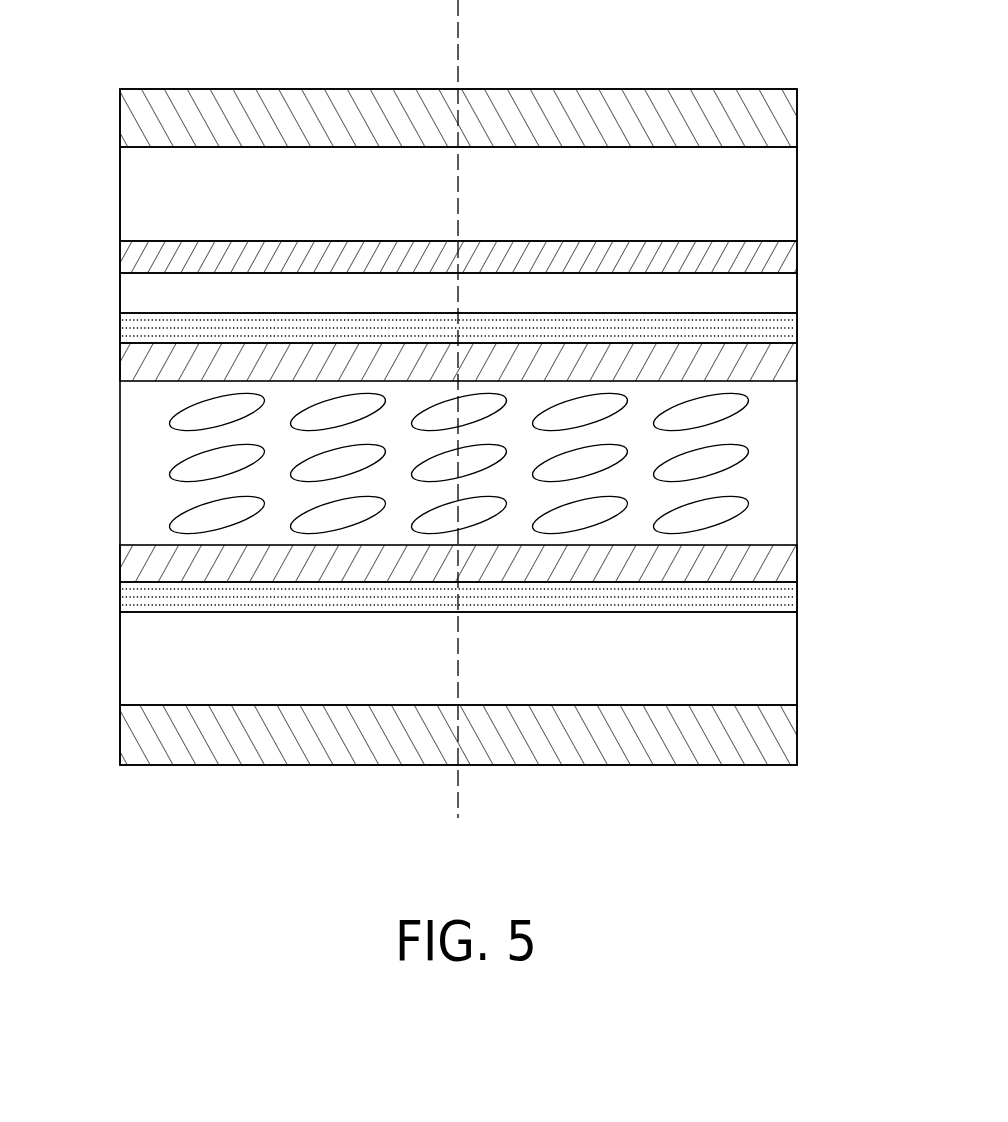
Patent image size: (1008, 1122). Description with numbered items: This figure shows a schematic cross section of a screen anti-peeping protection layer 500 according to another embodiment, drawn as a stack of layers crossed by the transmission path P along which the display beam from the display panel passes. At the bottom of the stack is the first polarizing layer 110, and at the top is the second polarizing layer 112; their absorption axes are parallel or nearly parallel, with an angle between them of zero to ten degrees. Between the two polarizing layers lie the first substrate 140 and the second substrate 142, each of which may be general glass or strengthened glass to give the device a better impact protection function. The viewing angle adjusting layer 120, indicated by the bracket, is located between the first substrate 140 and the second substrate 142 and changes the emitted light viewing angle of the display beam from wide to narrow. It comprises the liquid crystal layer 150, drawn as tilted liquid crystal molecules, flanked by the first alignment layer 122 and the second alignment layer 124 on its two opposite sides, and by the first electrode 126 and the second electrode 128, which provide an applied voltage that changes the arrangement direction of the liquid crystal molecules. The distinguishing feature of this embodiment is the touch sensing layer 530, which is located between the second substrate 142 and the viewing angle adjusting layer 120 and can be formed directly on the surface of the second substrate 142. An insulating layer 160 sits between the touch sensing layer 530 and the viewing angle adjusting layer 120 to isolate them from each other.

The first polarizing layer 110 is at (797, 732).
The second polarizing layer 112 is at (797, 117).
The viewing angle adjusting layer 120 is at (800, 315).
The first alignment layer 122 is at (120, 565).
The second alignment layer 124 is at (120, 365).
The first electrode 126 is at (120, 598).
The second electrode 128 is at (120, 334).
The first substrate 140 is at (797, 655).
The second substrate 142 is at (797, 190).
The liquid crystal layer 150 is at (111, 474).
The insulating layer 160 is at (797, 292).
The touch sensing layer 530 is at (797, 255).
The screen anti-peeping protection layer 500 is at (793, 821).
The transmission path P is at (461, 36).